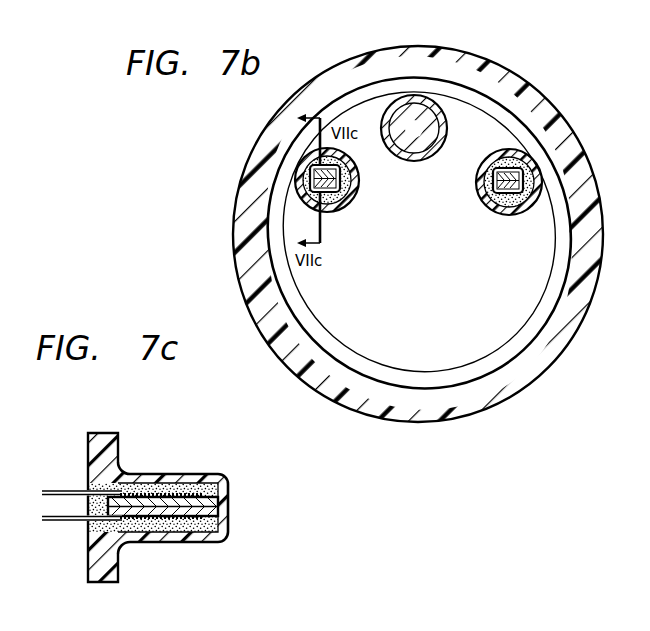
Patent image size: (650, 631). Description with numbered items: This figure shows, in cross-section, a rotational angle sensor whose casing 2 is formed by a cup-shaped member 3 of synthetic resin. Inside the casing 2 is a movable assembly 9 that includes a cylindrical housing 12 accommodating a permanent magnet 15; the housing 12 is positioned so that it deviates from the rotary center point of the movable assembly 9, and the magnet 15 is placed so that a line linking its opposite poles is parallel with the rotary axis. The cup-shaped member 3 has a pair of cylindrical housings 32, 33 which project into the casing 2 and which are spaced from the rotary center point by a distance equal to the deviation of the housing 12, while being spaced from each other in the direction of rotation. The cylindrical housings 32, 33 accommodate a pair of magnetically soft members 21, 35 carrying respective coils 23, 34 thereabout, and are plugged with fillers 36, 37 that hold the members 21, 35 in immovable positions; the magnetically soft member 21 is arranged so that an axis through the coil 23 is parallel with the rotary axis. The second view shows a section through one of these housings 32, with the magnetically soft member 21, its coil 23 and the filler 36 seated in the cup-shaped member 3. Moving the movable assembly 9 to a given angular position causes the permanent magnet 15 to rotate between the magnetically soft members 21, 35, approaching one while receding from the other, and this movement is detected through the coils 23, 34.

In FIG. 7B, the casing 2 is at (563, 362).
In FIG. 7B, the cup-shaped member 3 is at (374, 406).
In FIG. 7C, the cup-shaped member 3 is at (97, 455).
In FIG. 7B, the movable assembly 9 is at (489, 366).
In FIG. 7B, the cylindrical housing 12 is at (441, 120).
In FIG. 7B, the permanent magnet 15 is at (416, 114).
In FIG. 7B, the magnetically soft member 21 is at (314, 184).
In FIG. 7C, the magnetically soft member 21 is at (219, 512).
In FIG. 7B, the coil 23 is at (346, 188).
In FIG. 7C, the coil 23 is at (174, 495).
In FIG. 7B, the cylindrical housing 32 is at (316, 207).
In FIG. 7C, the cylindrical housing 32 is at (198, 478).
In FIG. 7B, the cylindrical housing 33 is at (541, 197).
In FIG. 7B, the coil 34 is at (495, 159).
In FIG. 7B, the magnetically soft member 35 is at (528, 176).
In FIG. 7B, the filler 36 is at (341, 210).
In FIG. 7C, the filler 36 is at (157, 482).
In FIG. 7B, the filler 37 is at (507, 152).